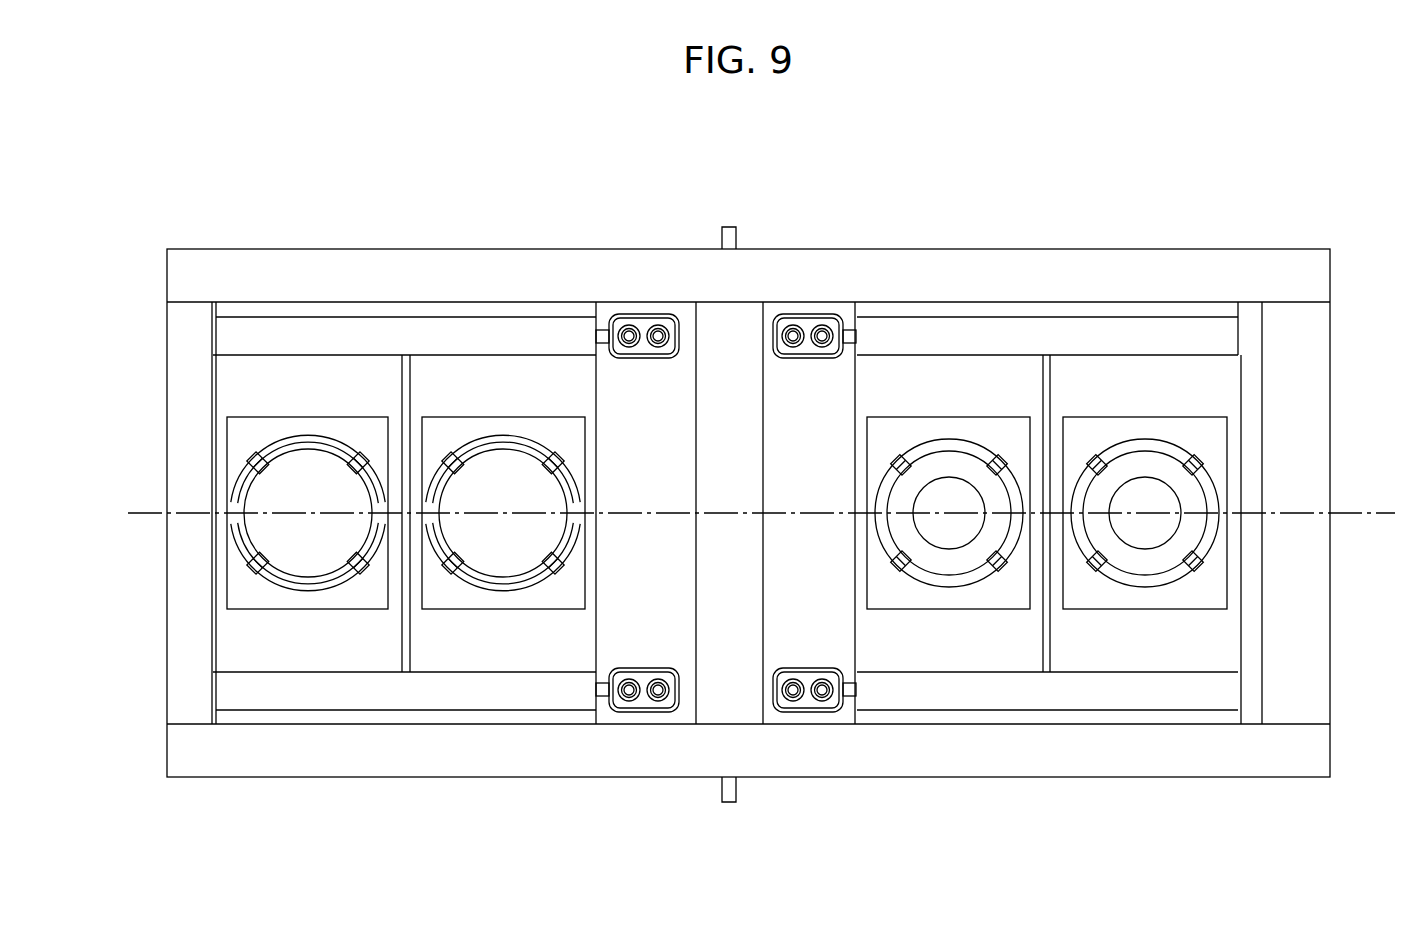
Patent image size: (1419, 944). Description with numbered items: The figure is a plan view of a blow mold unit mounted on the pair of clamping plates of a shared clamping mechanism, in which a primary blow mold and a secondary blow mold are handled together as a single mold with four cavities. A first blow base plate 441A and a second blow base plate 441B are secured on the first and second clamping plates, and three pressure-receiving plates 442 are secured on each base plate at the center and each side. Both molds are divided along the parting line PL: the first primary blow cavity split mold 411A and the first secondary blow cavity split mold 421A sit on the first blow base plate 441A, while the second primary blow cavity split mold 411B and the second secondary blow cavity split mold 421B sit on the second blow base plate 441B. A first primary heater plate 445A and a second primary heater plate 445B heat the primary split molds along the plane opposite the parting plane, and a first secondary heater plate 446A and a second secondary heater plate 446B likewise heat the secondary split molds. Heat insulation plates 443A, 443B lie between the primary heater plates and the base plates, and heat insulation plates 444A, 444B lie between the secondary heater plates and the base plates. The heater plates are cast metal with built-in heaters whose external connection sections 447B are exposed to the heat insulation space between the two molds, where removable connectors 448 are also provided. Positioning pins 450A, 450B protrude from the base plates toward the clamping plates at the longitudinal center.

The pressure-receiving plate 442 is at (176, 402).
The first blow base plate 441A is at (936, 258).
The second blow base plate 441B is at (936, 768).
The first secondary heater plate 446A is at (336, 330).
The second secondary heater plate 446B is at (336, 693).
The first heat insulation plate 444A is at (415, 330).
The second heat insulation plate 444B is at (415, 718).
The first heat insulation plate 443A is at (1003, 310).
The second heat insulation plate 443B is at (1003, 718).
The first primary heater plate 445A is at (1078, 335).
The second primary heater plate 445B is at (1078, 692).
The external connection section 447B is at (608, 325).
The connector 448 is at (650, 316).
The positioning pin 450A is at (728, 226).
The positioning pin 450B is at (728, 806).
The first secondary blow cavity split mold 421A is at (483, 370).
The second secondary blow cavity split mold 421B is at (483, 660).
The first primary blow cavity split mold 411A is at (1172, 370).
The second primary blow cavity split mold 411B is at (1172, 657).
The parting line PL is at (146, 512).